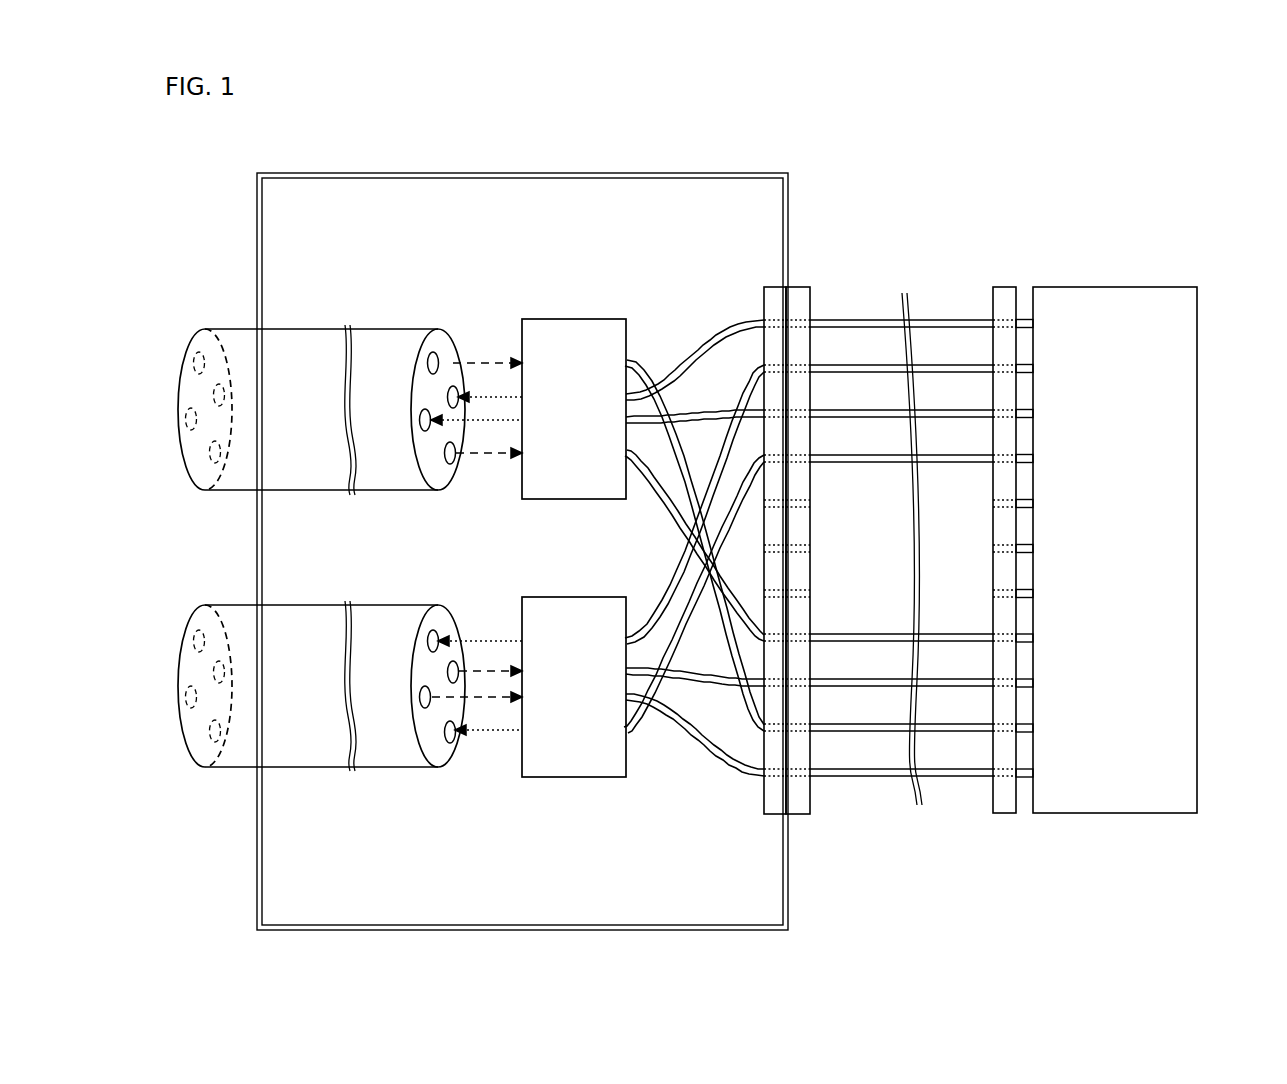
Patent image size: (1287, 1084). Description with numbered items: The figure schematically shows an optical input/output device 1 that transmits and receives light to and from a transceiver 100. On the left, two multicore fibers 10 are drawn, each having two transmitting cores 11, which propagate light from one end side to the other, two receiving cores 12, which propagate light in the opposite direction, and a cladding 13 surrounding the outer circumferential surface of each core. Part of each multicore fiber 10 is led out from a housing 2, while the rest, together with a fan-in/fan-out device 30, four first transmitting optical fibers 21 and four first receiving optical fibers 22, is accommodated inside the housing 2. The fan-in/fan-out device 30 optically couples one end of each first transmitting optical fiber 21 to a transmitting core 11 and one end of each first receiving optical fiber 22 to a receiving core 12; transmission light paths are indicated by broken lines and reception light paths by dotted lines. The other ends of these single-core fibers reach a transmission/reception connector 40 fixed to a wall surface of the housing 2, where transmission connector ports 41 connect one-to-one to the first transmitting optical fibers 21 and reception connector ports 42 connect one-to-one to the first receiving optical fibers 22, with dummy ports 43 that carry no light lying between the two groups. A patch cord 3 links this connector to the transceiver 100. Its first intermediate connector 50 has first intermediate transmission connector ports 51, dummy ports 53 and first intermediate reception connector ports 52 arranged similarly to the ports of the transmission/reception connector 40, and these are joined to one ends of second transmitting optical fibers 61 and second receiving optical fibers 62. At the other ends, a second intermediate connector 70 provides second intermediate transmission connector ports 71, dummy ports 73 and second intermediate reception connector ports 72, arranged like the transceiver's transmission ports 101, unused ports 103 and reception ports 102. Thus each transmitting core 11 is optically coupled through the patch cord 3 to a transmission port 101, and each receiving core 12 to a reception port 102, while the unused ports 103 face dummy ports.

The optical input/output device 1 is at (806, 164).
The housing 2 is at (268, 173).
The patch cord 3 is at (906, 262).
The multicore fiber 10 is at (306, 330).
The transmitting core 11 is at (429, 352).
The receiving core 12 is at (424, 410).
The cladding 13 is at (447, 333).
The first transmitting optical fiber 21 is at (690, 352).
The first receiving optical fiber 22 is at (641, 357).
The fan-in/fan-out device 30 is at (575, 335).
The transmission/reception connector 40 is at (775, 815).
The transmission connector port 41 is at (777, 318).
The reception connector port 42 is at (777, 641).
The dummy port 43 is at (770, 503).
The first intermediate connector 50 is at (798, 815).
The first intermediate transmission connector port 51 is at (798, 318).
The first intermediate reception connector port 52 is at (800, 641).
The dummy port 53 is at (805, 503).
The second transmitting optical fiber 61 is at (870, 320).
The second receiving optical fiber 62 is at (862, 679).
The second intermediate connector 70 is at (1003, 815).
The second intermediate transmission connector port 71 is at (1003, 318).
The second intermediate reception connector port 72 is at (1003, 641).
The dummy port 73 is at (1003, 503).
The transceiver 100 is at (1175, 290).
The transmission port 101 is at (1026, 322).
The reception port 102 is at (1030, 640).
The unused port 103 is at (1028, 503).